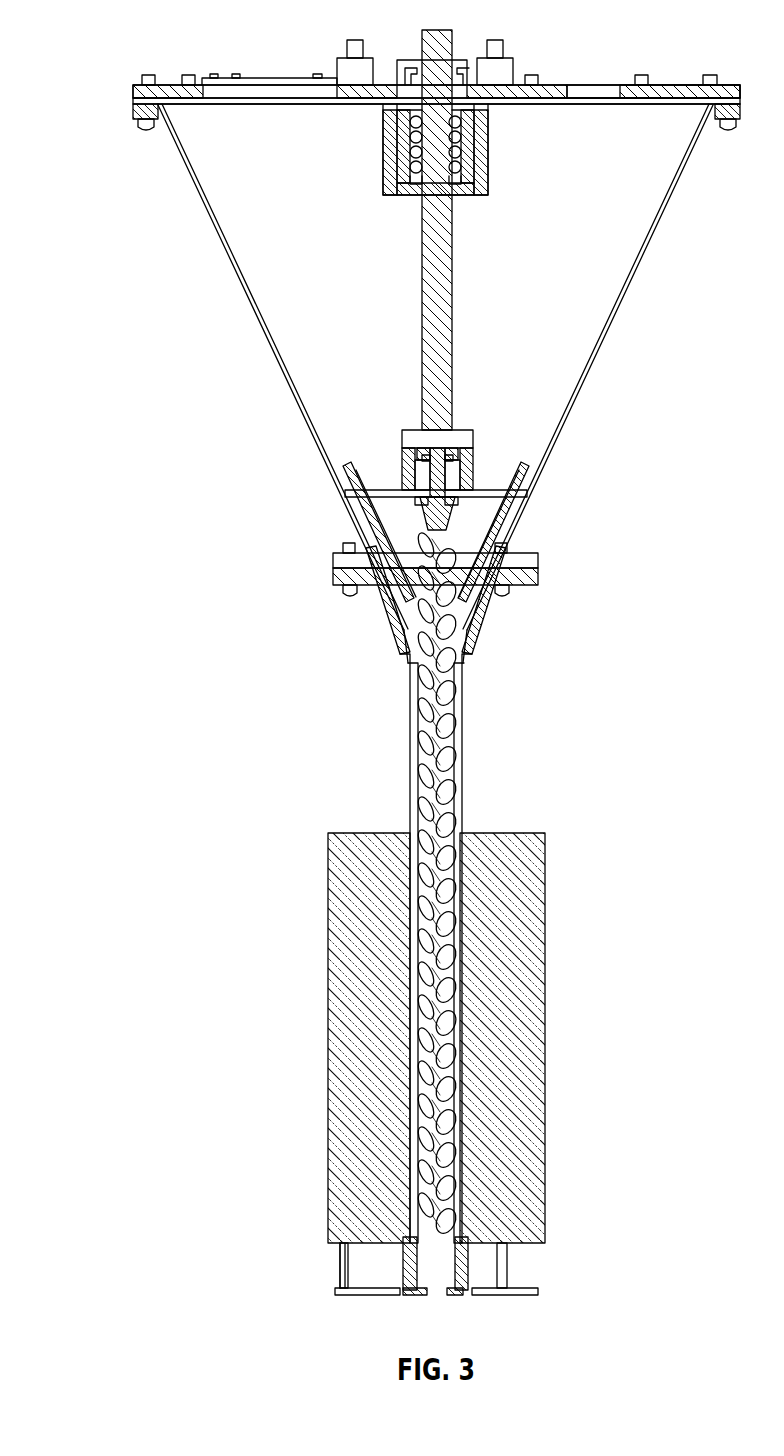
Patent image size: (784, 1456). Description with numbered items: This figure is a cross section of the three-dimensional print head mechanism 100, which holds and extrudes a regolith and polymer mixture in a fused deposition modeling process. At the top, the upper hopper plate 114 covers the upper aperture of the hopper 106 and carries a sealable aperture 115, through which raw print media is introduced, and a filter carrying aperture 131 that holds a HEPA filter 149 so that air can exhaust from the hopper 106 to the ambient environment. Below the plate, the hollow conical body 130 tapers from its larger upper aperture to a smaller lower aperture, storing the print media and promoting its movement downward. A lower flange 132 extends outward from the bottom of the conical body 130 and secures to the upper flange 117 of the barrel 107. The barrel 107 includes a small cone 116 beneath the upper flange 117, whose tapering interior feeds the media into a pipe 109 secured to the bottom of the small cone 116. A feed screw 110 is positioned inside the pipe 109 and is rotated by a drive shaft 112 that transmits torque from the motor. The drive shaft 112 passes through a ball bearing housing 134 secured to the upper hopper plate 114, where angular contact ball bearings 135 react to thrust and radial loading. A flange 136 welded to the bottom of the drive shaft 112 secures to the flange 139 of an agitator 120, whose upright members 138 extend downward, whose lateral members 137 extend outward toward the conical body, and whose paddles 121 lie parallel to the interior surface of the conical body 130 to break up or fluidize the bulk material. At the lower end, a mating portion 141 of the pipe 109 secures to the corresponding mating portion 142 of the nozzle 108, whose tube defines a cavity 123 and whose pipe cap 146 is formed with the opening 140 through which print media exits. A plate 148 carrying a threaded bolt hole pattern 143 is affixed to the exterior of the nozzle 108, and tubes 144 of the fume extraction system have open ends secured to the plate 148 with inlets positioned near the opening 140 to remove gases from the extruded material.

The 3D print head mechanism 100 is at (103, 288).
The hopper 106 is at (250, 305).
The barrel 107 is at (493, 718).
The nozzle 108 is at (520, 1262).
The pipe 109 is at (410, 725).
The feed screw 110 is at (333, 560).
The drive shaft 112 is at (452, 285).
The upper hopper plate 114 is at (120, 45).
The sealable aperture 115 is at (265, 62).
The small cone 116 is at (338, 493).
The upper flange 117 is at (540, 575).
The agitator 120 is at (345, 512).
The paddle 121 is at (515, 535).
The cavity 123 is at (400, 1258).
The hollow conical body 130 is at (625, 310).
The filter carrying aperture 131 is at (588, 68).
The lower flange 132 is at (540, 560).
The ball bearing housing 134 is at (385, 150).
The angular contact ball bearings 135 is at (390, 175).
The flange 136 is at (402, 425).
The lateral member 137 is at (405, 497).
The upright member 138 is at (395, 470).
The flange 139 is at (398, 458).
The opening 140 is at (440, 1300).
The mating portion 141 is at (470, 1240).
The mating portion 142 is at (475, 1235).
The threaded bolt hole pattern 143 is at (362, 1302).
The tube 144 is at (370, 1255).
The pipe cap 146 is at (398, 1280).
The plate 148 is at (548, 1292).
The HEPA filter 149 is at (588, 115).